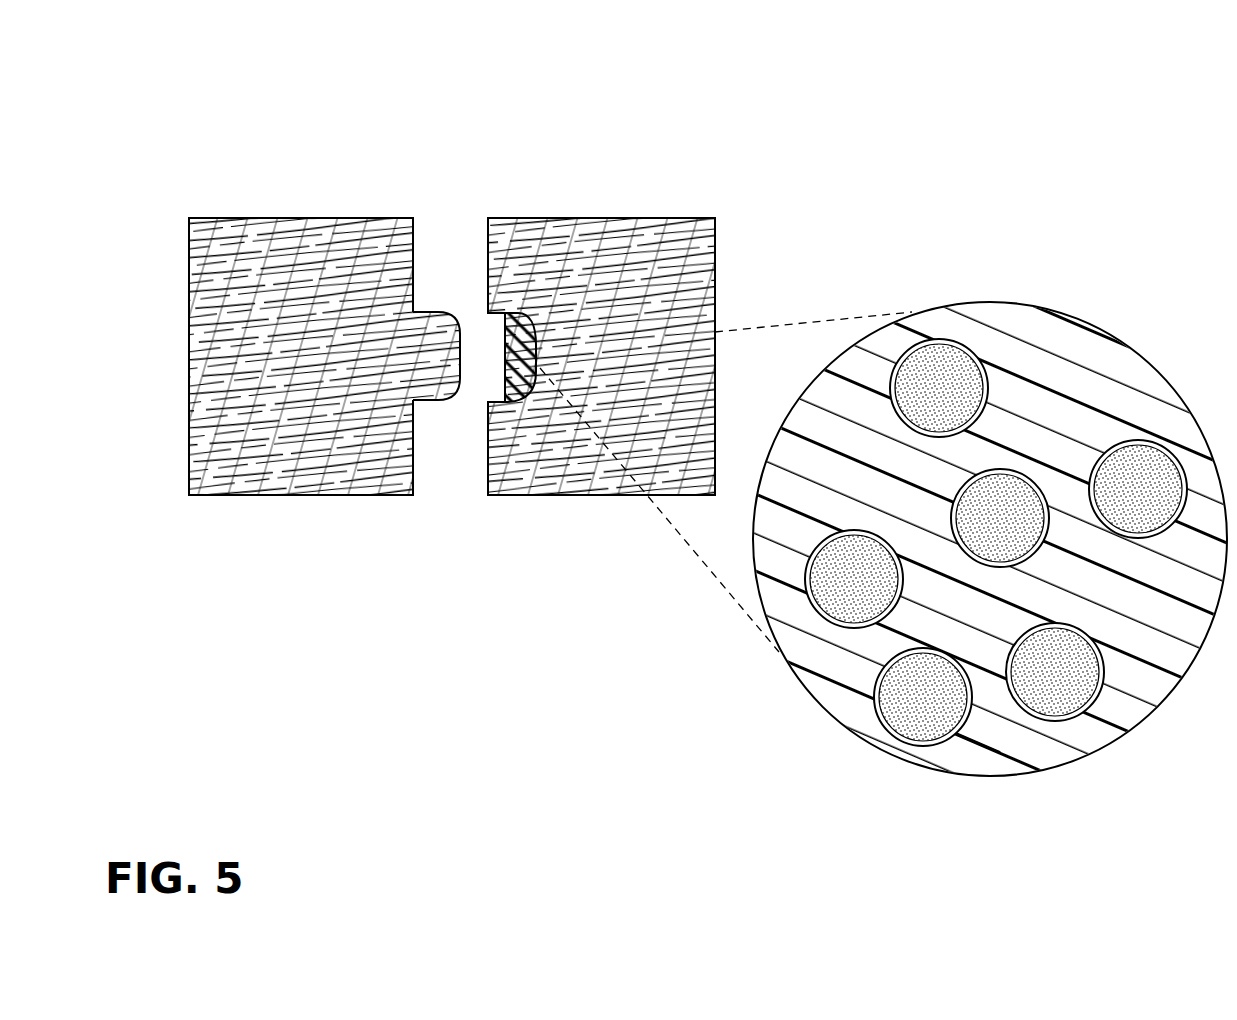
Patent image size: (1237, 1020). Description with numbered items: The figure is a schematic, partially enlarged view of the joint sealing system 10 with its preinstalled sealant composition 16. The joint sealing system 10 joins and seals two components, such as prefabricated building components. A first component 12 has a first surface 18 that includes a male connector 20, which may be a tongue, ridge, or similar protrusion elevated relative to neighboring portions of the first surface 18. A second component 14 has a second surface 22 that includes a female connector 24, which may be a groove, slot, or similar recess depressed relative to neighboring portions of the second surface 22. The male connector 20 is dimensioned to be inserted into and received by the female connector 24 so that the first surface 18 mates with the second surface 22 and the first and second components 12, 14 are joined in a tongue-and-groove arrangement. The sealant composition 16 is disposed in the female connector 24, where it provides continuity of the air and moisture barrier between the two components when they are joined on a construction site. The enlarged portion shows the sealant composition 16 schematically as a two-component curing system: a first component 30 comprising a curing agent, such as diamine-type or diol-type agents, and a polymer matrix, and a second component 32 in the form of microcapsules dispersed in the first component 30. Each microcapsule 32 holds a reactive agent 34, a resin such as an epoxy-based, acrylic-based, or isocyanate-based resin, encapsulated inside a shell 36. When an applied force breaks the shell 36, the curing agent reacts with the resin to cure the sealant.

The joint sealing system 10 is at (453, 140).
The first component 12 is at (312, 218).
The second component 14 is at (643, 218).
The sealant composition 16 is at (495, 337).
The first surface 18 is at (414, 467).
The male connector 20 is at (443, 306).
The second surface 22 is at (488, 476).
The female connector 24 is at (488, 388).
The first component of the sealant composition 30 is at (847, 702).
The second component of the sealant composition 32 is at (932, 752).
The reactive agent 34 is at (912, 702).
The shell 36 is at (965, 735).